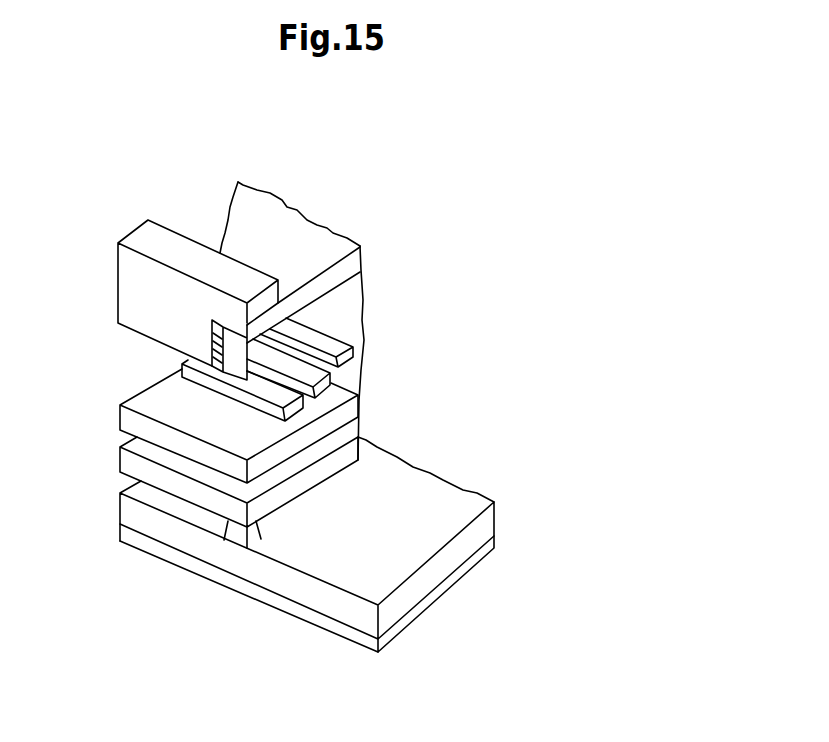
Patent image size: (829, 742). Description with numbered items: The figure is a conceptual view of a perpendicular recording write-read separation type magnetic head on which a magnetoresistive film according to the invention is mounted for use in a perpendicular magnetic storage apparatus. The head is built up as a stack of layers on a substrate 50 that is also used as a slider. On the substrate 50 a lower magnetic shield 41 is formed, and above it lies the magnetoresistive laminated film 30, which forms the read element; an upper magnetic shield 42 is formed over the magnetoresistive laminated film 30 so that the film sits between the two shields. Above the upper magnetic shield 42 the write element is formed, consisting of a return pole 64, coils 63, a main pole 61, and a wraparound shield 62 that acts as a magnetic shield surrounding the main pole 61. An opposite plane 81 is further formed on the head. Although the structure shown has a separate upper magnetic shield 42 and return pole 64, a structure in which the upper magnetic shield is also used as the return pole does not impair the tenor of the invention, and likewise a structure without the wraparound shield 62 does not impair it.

The magnetoresistive laminated film 30 is at (238, 536).
The lower magnetic shield 41 is at (137, 518).
The upper magnetic shield 42 is at (128, 465).
The substrate 50 is at (140, 542).
The main pole 61 is at (212, 321).
The wraparound shield 62 is at (227, 268).
The coils 63 is at (332, 387).
The return pole 64 is at (128, 420).
The opposite plane 81 is at (190, 575).